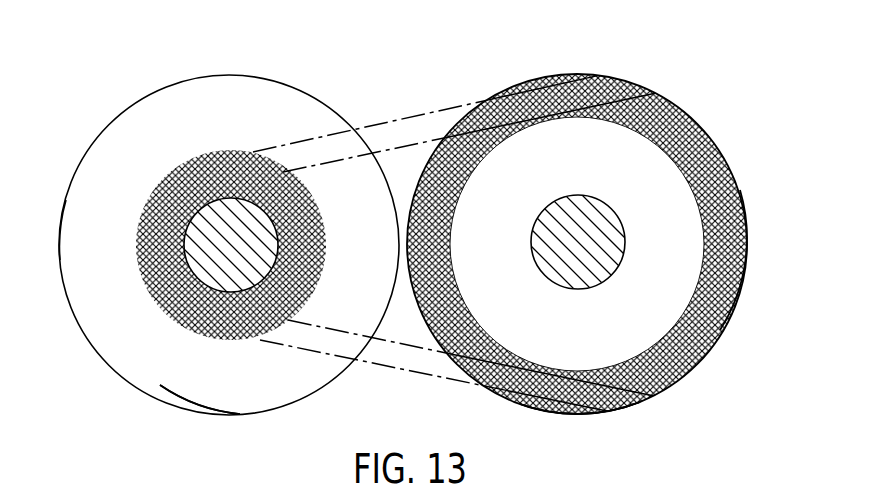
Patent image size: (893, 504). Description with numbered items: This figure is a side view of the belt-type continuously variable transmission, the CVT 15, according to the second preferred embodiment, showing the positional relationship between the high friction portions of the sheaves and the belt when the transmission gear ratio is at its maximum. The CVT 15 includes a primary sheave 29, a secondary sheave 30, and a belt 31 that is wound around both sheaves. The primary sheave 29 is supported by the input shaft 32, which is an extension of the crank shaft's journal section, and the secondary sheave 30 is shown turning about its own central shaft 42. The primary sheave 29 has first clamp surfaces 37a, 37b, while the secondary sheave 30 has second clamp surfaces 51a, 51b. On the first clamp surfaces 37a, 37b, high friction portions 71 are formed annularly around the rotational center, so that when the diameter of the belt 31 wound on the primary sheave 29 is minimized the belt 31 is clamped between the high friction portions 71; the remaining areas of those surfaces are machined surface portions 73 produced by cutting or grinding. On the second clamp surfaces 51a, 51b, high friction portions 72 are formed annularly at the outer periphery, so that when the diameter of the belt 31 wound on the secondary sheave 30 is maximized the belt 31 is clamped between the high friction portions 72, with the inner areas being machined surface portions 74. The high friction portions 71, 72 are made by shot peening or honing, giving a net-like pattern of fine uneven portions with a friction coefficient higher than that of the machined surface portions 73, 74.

The CVT 15 is at (108, 109).
The primary sheave 29 is at (238, 73).
The machined surface portions 73 is at (80, 178).
The high friction portions 71 is at (146, 288).
The input shaft 32 is at (265, 241).
The first clamp surface 37a is at (195, 398).
The first clamp surface 37b is at (195, 398).
The belt 31 is at (418, 102).
The secondary sheave 30 is at (627, 137).
The high friction portions 72 is at (462, 307).
The machined surface portions 74 is at (680, 280).
The second shaft 42 is at (615, 237).
The second clamp surface 51a is at (599, 357).
The second clamp surface 51b is at (599, 357).